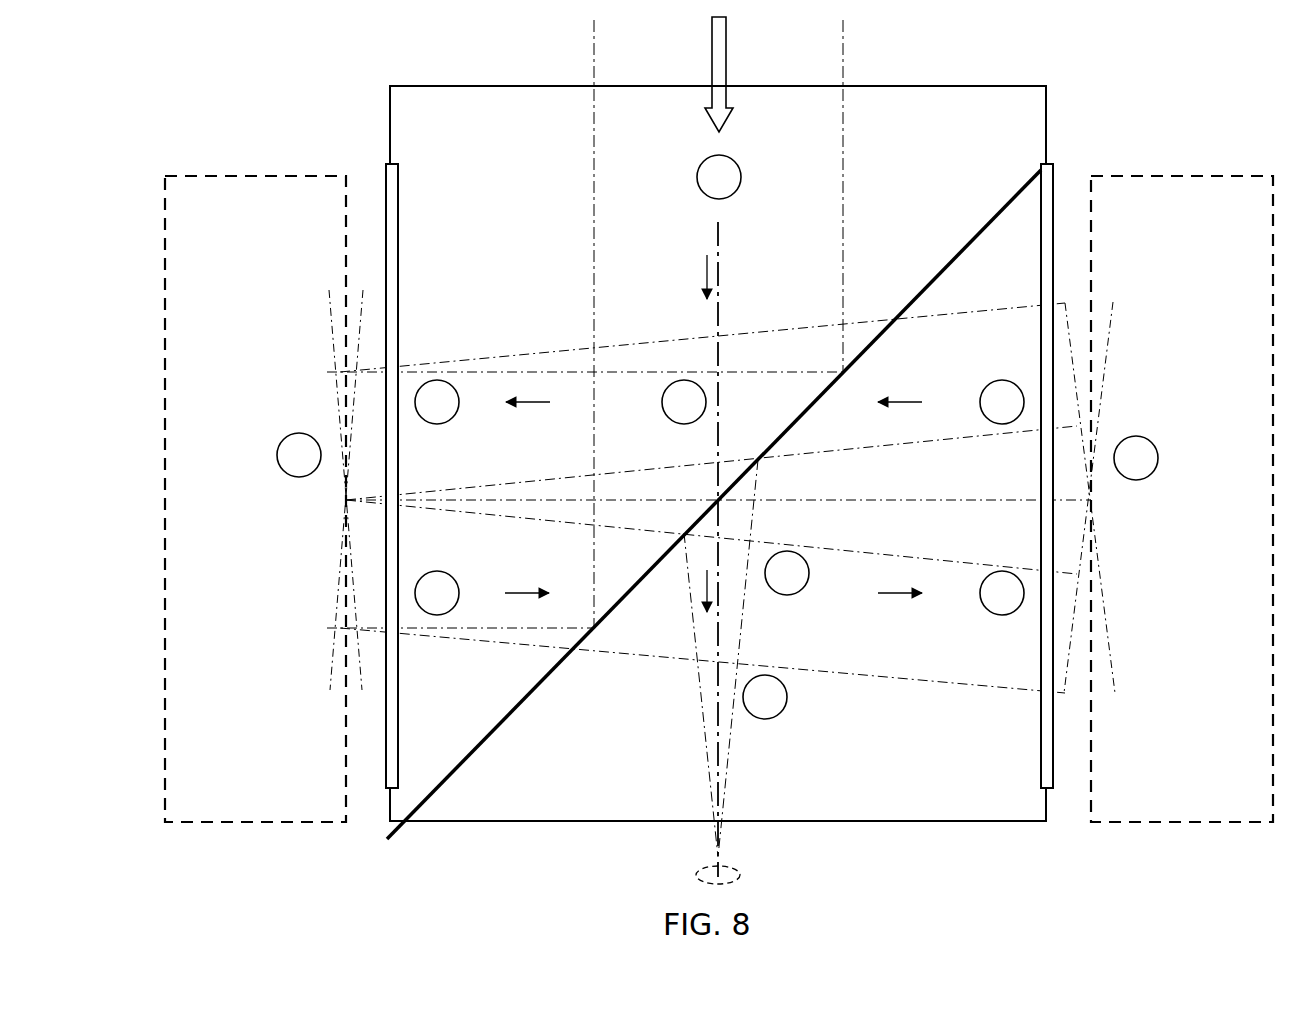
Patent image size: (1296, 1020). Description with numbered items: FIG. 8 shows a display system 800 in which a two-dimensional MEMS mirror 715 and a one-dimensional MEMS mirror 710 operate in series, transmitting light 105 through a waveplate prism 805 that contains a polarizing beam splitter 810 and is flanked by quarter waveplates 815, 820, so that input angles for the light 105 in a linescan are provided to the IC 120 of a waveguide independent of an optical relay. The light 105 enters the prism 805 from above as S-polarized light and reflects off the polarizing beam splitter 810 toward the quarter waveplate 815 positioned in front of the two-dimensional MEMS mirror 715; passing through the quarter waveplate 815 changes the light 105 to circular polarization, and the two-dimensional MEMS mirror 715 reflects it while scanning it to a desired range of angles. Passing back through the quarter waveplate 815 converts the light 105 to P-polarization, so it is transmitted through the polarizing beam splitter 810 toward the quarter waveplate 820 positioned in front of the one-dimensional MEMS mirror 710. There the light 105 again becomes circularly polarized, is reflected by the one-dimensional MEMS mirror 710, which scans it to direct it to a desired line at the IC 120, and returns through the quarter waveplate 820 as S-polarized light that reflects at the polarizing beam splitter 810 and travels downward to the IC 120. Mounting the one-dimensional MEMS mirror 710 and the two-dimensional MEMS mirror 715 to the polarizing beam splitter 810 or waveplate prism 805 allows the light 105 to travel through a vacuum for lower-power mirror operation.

The display system 800 is at (1198, 82).
The light 105 is at (712, 68).
The waveplate prism 805 is at (482, 190).
The quarter waveplate 815 is at (385, 172).
The quarter waveplate 820 is at (1055, 173).
The polarizing beam splitter 810 is at (490, 733).
The 2-D MEMS mirror 715 is at (275, 507).
The 1-D MEMS mirror 710 is at (1202, 512).
The IC 120 is at (742, 870).